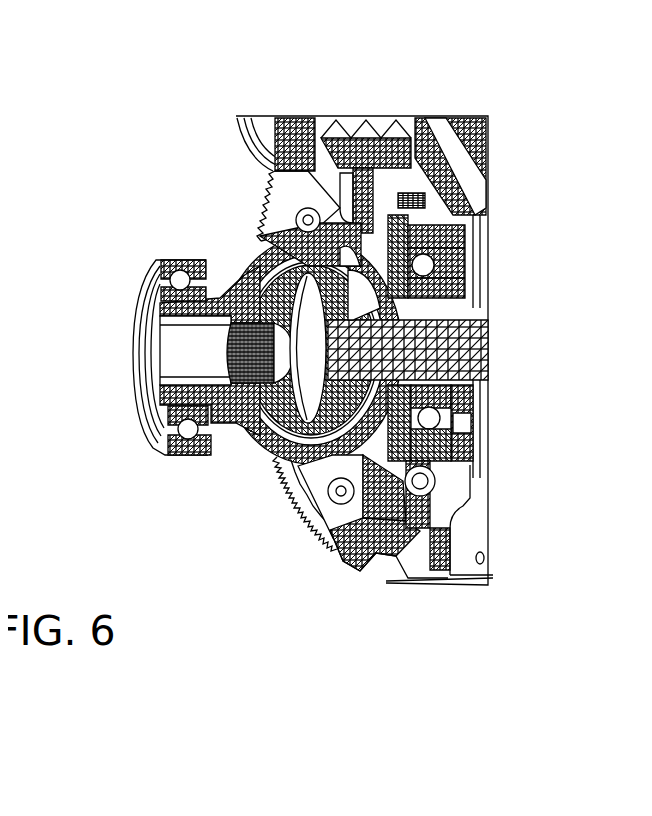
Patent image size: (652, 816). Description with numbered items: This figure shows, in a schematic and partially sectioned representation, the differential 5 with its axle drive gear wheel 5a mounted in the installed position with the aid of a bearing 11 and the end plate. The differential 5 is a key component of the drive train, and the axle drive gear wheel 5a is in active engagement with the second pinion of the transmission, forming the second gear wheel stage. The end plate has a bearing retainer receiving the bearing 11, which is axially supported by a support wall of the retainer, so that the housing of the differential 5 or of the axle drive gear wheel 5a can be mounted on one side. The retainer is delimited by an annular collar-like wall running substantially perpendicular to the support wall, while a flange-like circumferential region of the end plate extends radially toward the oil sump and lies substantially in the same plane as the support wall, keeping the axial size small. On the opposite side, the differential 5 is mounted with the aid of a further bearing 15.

The differential 5 is at (277, 411).
The axle drive gear wheel 5a is at (345, 148).
The bearing 11 is at (416, 255).
The further bearing 15 is at (150, 268).